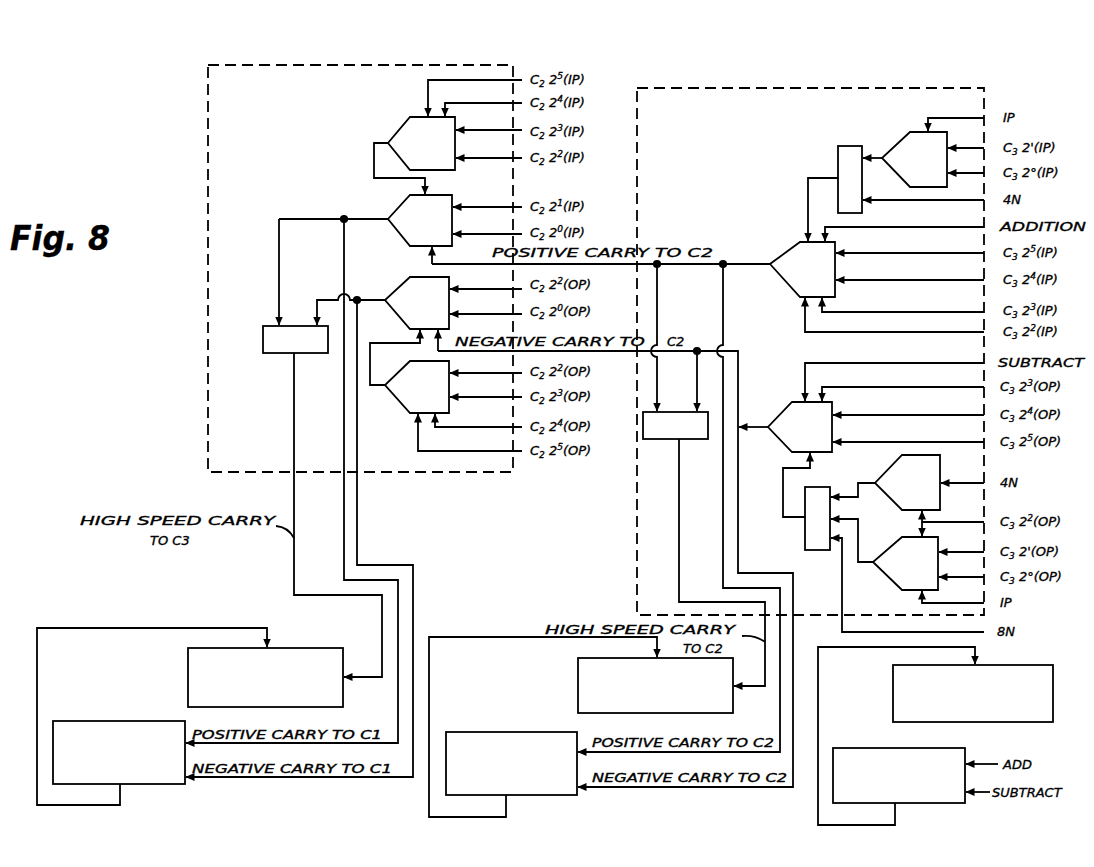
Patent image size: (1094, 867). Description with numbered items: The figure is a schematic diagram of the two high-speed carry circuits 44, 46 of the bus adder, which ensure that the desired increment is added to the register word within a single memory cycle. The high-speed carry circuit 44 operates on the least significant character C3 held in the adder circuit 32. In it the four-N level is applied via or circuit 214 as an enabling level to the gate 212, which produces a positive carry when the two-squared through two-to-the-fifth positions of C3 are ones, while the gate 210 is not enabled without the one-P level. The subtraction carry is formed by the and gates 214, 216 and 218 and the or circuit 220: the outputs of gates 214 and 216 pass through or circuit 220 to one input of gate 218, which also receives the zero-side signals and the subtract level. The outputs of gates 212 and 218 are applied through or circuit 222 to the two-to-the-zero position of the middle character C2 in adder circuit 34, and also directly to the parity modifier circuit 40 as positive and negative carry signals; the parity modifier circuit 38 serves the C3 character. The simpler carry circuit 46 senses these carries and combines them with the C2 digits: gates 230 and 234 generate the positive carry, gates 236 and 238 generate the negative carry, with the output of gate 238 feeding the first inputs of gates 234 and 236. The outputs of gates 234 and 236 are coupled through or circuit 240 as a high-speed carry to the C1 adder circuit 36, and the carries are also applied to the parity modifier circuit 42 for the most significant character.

The high-speed carry circuit 46 is at (506, 51).
The high-speed carry circuit 44 is at (940, 91).
The and gate 230 is at (407, 123).
The and gate 234 is at (406, 206).
The and gate 236 is at (408, 283).
The and gate 238 is at (404, 408).
The or circuit 240 is at (267, 353).
The gate 210 is at (909, 130).
The and gate 212 is at (797, 242).
The or circuit / and gate 214 is at (838, 146).
The and gate 216 is at (882, 480).
The and gate 218 is at (794, 402).
The or circuit 220 is at (805, 541).
The or circuit 222 is at (654, 440).
The adder circuit 36 is at (188, 664).
The adder circuit 34 is at (578, 680).
The adder circuit 32 is at (893, 690).
The character modifier circuit 42 is at (156, 785).
The character modifier circuit 40 is at (535, 796).
The parity modifier circuit 38 is at (925, 804).